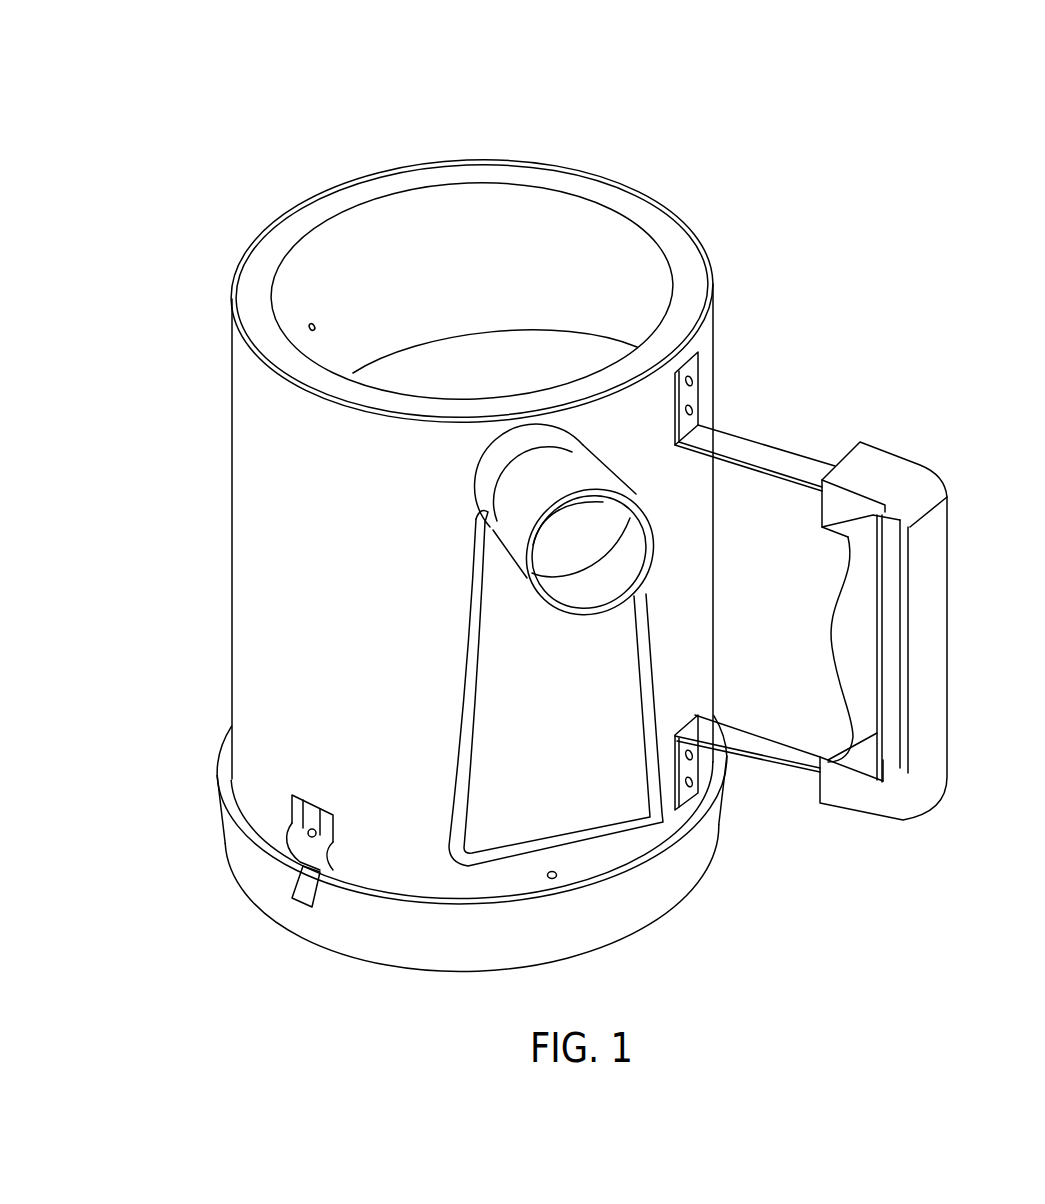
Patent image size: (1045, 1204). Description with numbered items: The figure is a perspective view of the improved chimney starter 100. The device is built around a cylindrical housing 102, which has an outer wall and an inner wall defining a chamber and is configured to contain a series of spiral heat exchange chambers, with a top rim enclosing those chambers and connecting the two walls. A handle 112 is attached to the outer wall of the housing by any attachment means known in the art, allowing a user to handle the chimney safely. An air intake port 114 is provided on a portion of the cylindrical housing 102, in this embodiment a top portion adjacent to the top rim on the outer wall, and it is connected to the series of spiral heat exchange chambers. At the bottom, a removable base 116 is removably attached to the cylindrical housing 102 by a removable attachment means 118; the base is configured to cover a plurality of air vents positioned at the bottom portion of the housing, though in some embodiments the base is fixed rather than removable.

The improved chimney starter 100 is at (147, 130).
The cylindrical housing 102 is at (232, 467).
The handle 112 is at (878, 445).
The air intake port 114 is at (521, 502).
The removable base 116 is at (370, 947).
The removable attachment means 118 is at (292, 823).